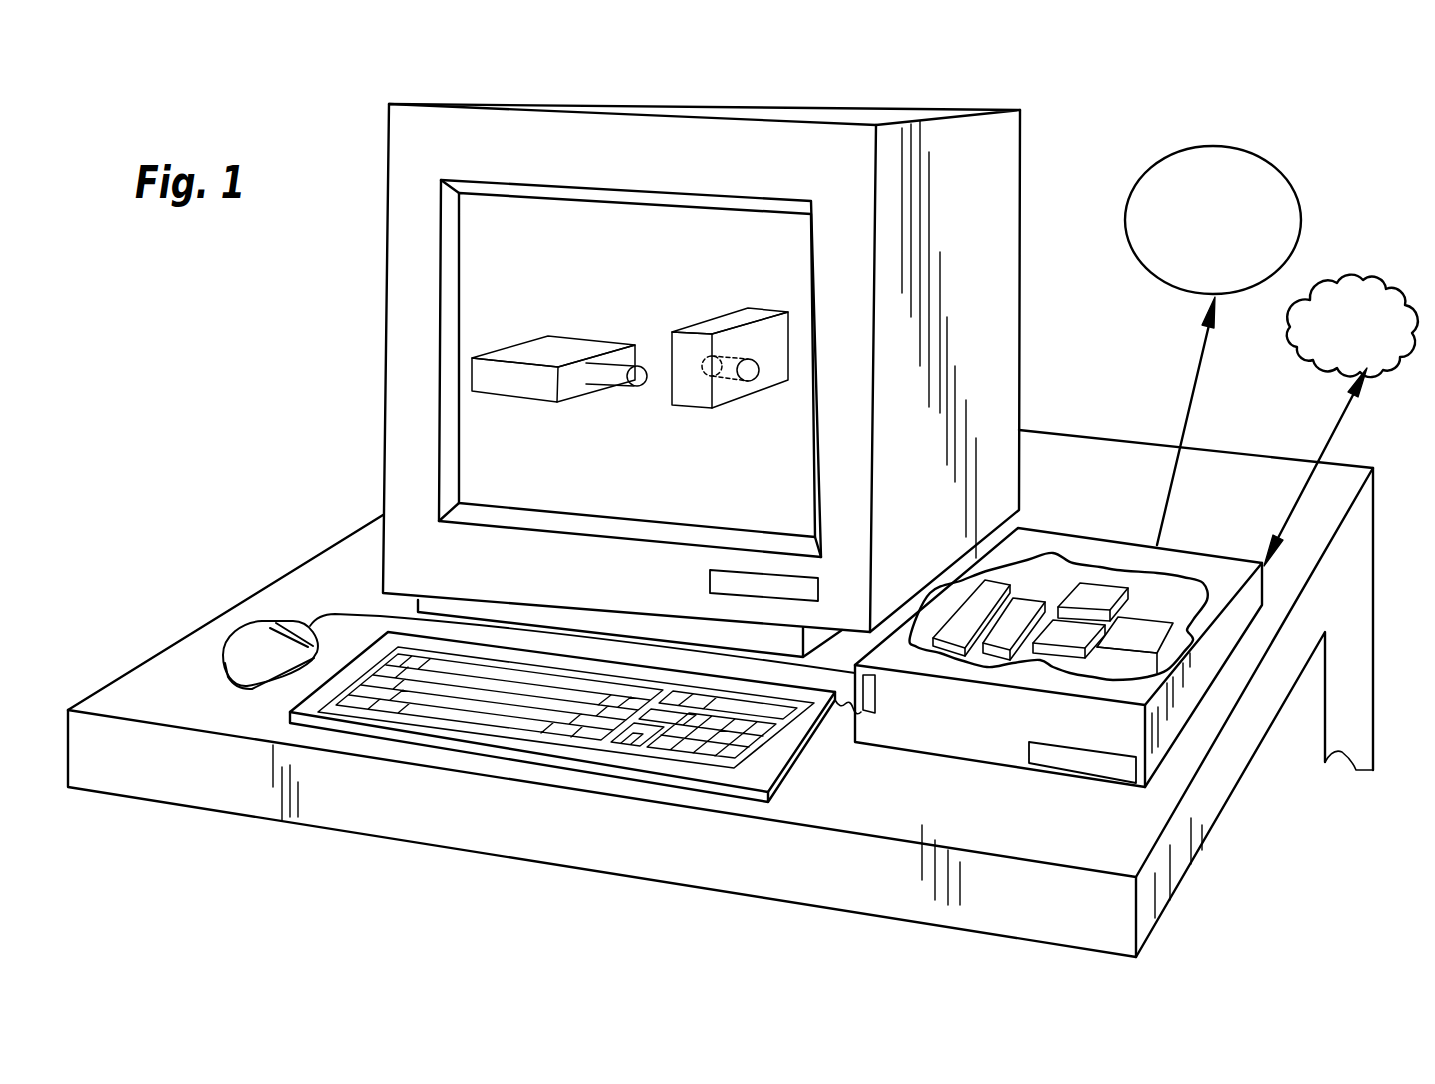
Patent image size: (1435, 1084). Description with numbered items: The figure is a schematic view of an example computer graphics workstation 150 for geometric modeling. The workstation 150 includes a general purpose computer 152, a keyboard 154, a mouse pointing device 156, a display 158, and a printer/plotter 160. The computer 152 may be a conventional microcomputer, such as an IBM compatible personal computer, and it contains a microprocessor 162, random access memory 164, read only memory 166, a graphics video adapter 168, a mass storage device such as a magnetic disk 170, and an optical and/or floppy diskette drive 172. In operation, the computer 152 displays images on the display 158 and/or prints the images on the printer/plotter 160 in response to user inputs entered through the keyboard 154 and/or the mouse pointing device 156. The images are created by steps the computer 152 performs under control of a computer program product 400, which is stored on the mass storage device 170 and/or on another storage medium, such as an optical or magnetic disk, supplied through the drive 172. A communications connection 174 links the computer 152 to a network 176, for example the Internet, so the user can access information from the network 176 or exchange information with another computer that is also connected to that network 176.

The computer graphics workstation 150 is at (1107, 395).
The general purpose computer 152 is at (1028, 532).
The keyboard 154 is at (787, 777).
The mouse pointing device 156 is at (250, 647).
The display 158 is at (1012, 177).
The printer/plotter 160 is at (1267, 157).
The microprocessor 162 is at (1030, 592).
The random access memory 164 is at (1087, 580).
The read only memory 166 is at (1053, 653).
The graphics video adapter 168 is at (947, 650).
The magnetic disk 170 is at (1130, 617).
The optical and/or floppy diskette drive 172 is at (1047, 762).
The communications connection 174 is at (1295, 518).
The network 176 is at (1352, 326).
The computer program product 400 is at (1200, 633).